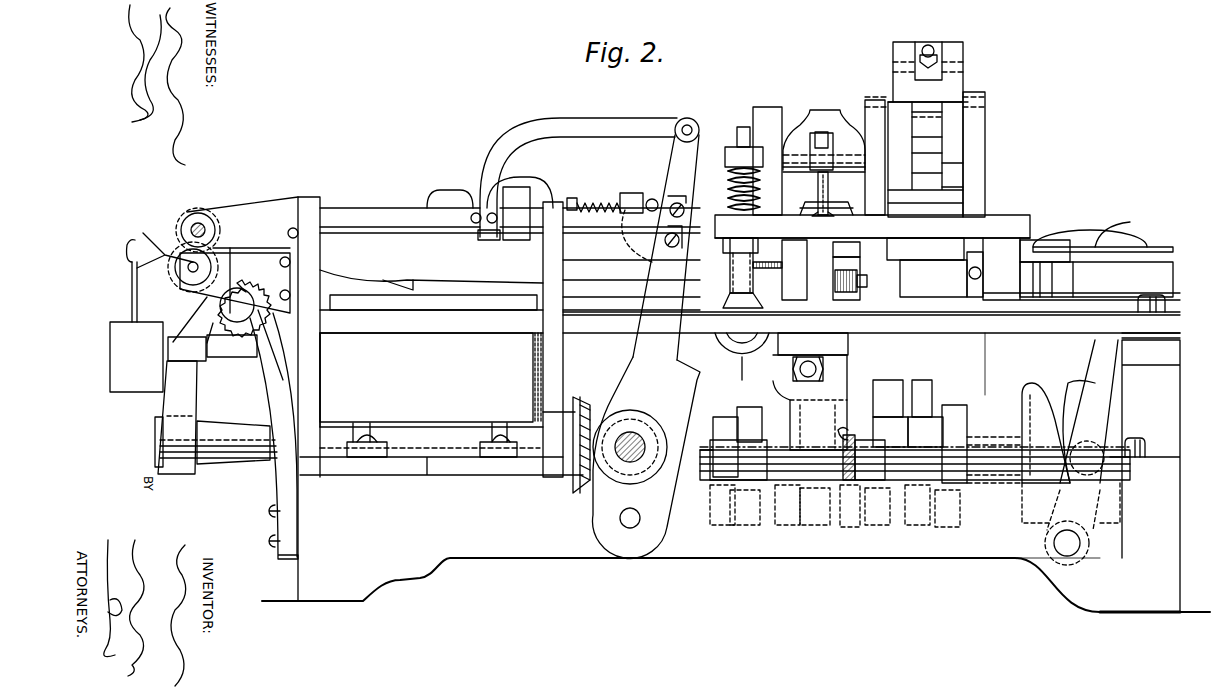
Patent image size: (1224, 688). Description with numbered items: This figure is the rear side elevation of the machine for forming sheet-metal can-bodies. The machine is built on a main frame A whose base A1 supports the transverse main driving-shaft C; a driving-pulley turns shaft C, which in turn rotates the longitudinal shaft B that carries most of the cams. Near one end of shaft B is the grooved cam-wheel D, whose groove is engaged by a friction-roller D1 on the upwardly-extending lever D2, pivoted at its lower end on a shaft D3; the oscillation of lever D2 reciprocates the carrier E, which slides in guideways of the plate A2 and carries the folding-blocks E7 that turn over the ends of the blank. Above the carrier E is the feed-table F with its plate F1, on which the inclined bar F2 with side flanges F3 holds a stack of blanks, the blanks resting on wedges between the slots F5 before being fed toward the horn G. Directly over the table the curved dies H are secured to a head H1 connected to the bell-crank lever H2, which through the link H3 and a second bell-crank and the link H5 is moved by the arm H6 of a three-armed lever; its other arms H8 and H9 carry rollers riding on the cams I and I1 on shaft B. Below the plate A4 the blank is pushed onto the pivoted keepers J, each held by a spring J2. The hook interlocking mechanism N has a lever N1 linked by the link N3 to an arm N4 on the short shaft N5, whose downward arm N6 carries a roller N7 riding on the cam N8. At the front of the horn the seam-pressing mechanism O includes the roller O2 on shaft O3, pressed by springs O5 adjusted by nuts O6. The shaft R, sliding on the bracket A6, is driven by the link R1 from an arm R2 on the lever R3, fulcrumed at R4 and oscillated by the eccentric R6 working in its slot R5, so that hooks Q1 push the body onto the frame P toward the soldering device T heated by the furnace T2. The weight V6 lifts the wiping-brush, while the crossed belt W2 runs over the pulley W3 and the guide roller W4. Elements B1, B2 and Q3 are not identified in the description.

The main frame A is at (1165, 405).
The base A1 is at (1097, 577).
The plate A2 is at (990, 334).
The plate A4 is at (970, 226).
The bracket A6 is at (308, 394).
The longitudinally-extending shaft B is at (270, 465).
The bearing plate B1 is at (543, 412).
The shaft bearing B2 is at (998, 453).
The main driving-shaft C is at (623, 467).
The grooved cam-wheel D is at (1041, 420).
The friction-roller D1 is at (1071, 485).
The lever D2 is at (1092, 376).
The shaft D3 is at (1067, 543).
The carrier E is at (1040, 269).
The folding-blocks E7 is at (978, 265).
The feed-table F is at (1100, 266).
The plate F1 is at (1152, 252).
The inclined bar F2 is at (180, 228).
The flanges F3 is at (1090, 233).
The slots F5 is at (1060, 256).
The horn G is at (790, 285).
The curved dies H is at (925, 250).
The head H1 is at (953, 175).
The bell-crank lever H2 is at (953, 89).
The link H3 is at (931, 46).
The link H5 is at (832, 208).
The arm H6 is at (797, 118).
The arm H8 is at (927, 401).
The arm H9 is at (925, 527).
The cam I is at (880, 406).
The cam I1 is at (960, 411).
The keepers J is at (872, 226).
The spring J2 is at (868, 279).
The hook interlocking mechanism N is at (843, 456).
The lever N1 is at (835, 351).
The link N3 is at (825, 369).
The arm N4 is at (810, 402).
The short shaft N5 is at (826, 516).
The arm N6 is at (700, 462).
The friction-roller N7 is at (745, 525).
The cam N8 is at (742, 417).
The seam-pressing mechanism O is at (743, 273).
The roller O2 is at (740, 375).
The shaft O3 is at (752, 340).
The spring O5 is at (728, 183).
The nut O6 is at (733, 155).
The frame P is at (510, 261).
The hooks Q1 is at (645, 250).
The spring Q3 is at (600, 188).
The shaft R is at (380, 215).
The link R1 is at (590, 125).
The arm R2 is at (676, 159).
The lever R3 is at (657, 307).
The fulcrum R4 is at (628, 528).
The slot R5 is at (630, 459).
The eccentric R6 is at (669, 383).
The soldering device T is at (510, 304).
The furnace T2 is at (441, 404).
The weight V6 is at (151, 312).
The crossed belt W2 is at (176, 417).
The pulley W3 is at (202, 421).
The friction-roller W4 is at (225, 330).